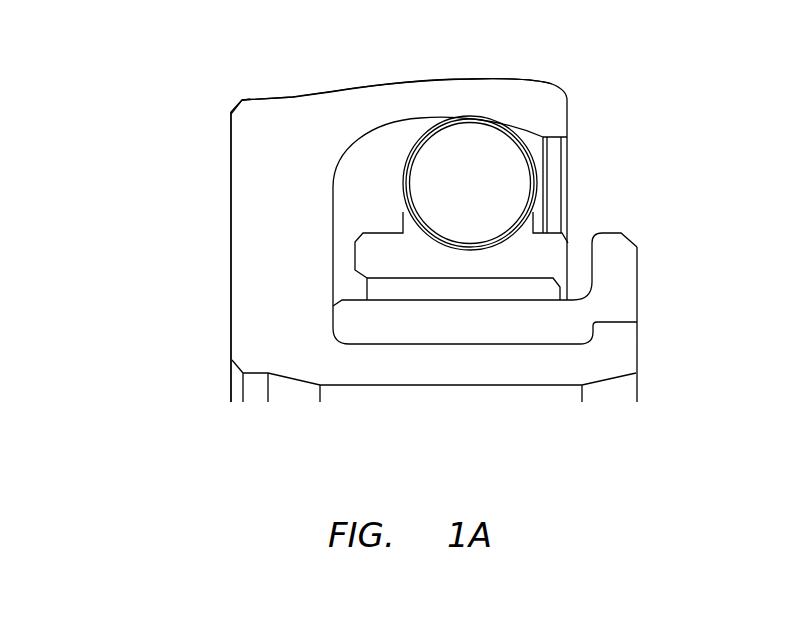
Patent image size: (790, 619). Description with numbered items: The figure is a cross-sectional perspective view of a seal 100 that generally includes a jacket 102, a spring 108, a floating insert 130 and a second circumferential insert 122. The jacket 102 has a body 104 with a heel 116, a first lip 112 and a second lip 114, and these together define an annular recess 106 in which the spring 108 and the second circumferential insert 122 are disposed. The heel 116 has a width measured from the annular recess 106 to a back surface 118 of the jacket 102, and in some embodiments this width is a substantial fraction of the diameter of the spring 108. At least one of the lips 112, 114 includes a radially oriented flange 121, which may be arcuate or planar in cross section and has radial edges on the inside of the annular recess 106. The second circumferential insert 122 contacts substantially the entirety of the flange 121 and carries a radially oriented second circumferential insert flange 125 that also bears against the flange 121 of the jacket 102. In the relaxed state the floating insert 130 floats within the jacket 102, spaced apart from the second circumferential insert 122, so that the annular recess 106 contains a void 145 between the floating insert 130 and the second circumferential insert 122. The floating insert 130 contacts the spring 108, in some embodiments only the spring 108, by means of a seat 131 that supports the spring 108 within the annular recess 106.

The seal 100 is at (146, 49).
The jacket 102 is at (240, 101).
The body 104 is at (257, 110).
The annular recess 106 is at (360, 152).
The spring 108 is at (528, 167).
The first lip 112 is at (453, 90).
The second lip 114 is at (522, 377).
The heel 116 is at (245, 270).
The back surface 118 is at (245, 227).
The radially oriented flange 121 is at (625, 345).
The second circumferential insert 122 is at (625, 287).
The second circumferential insert flange 125 is at (622, 242).
The floating insert 130 is at (553, 242).
The seat 131 is at (467, 253).
The void 145 is at (377, 288).